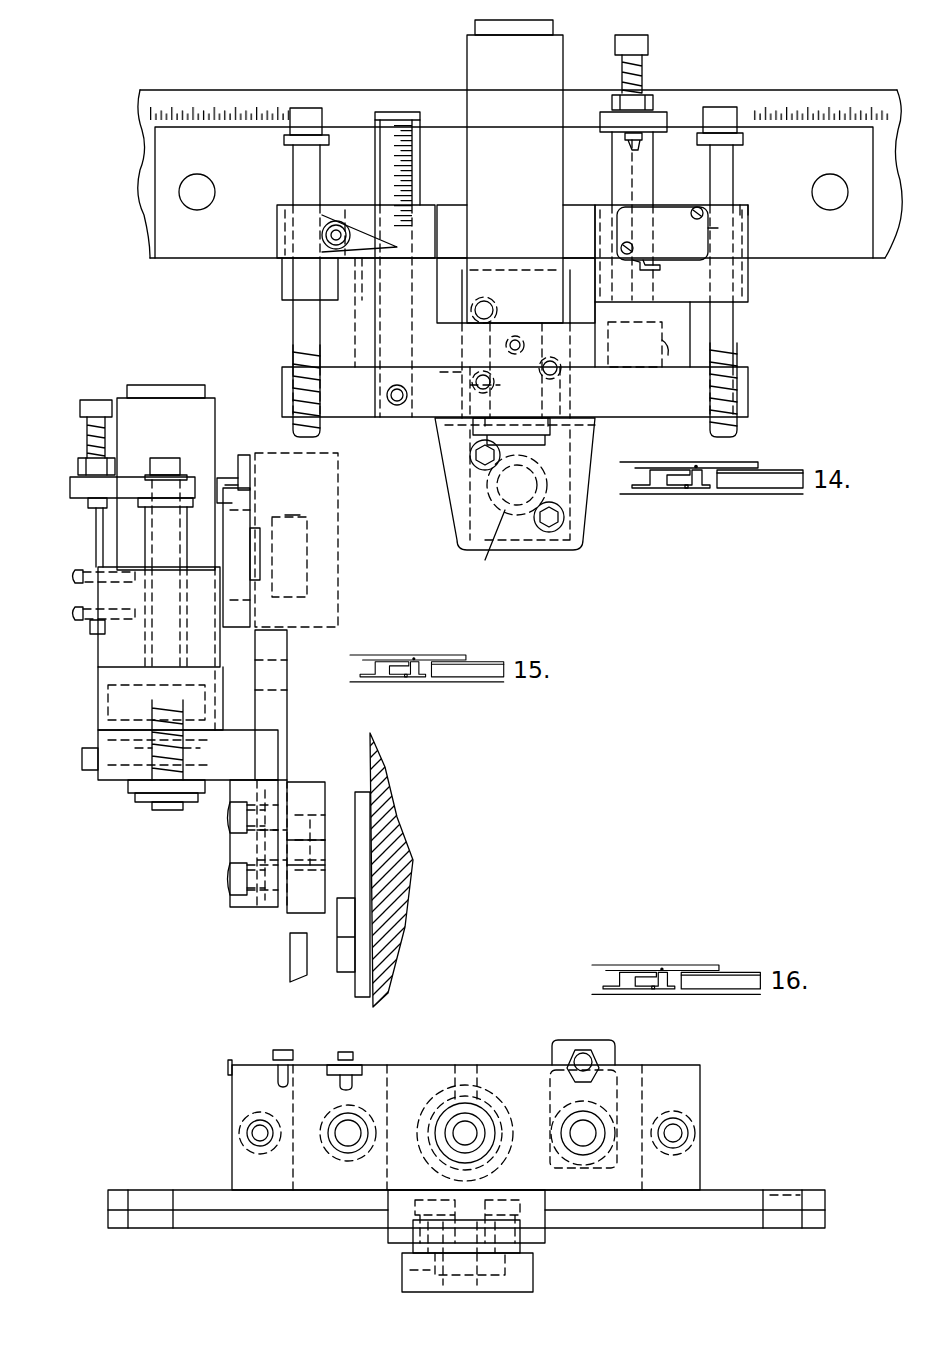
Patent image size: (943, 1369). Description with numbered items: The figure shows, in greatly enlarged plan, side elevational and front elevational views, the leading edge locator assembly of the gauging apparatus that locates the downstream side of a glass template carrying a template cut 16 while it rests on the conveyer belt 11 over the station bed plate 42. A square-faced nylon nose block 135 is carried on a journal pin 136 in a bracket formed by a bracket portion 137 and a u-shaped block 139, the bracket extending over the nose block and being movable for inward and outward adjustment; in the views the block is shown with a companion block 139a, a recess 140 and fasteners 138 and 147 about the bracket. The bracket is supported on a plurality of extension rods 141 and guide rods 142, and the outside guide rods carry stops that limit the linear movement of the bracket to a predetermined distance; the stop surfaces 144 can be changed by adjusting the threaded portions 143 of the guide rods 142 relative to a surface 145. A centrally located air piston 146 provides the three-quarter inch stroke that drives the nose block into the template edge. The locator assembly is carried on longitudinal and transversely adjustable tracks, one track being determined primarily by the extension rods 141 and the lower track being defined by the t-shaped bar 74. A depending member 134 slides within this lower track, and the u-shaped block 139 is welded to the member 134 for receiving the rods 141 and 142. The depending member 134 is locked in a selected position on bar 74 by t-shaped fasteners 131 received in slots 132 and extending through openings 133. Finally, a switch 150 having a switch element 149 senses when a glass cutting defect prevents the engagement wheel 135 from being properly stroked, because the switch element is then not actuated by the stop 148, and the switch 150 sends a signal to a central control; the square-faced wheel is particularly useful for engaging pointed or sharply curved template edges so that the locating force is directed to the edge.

In FIG. 15, the conveyer belt 11 is at (362, 917).
In FIG. 15, the template cut 16 is at (297, 947).
In FIG. 15, the station bed plate 42 is at (390, 810).
In FIG. 15, the t-slotted bar 74 is at (332, 593).
In FIG. 15, the t-shaped fastener 131 is at (297, 553).
In FIG. 15, the slot 132 is at (292, 517).
In FIG. 14, the opening 133 is at (188, 190).
In FIG. 16, the opening 133 is at (793, 1193).
In FIG. 14, the depending member 134 is at (230, 148).
In FIG. 15, the depending member 134 is at (230, 513).
In FIG. 16, the depending member 134 is at (825, 1200).
In FIG. 14, the nylon nose block 135 is at (578, 522).
In FIG. 15, the nylon nose block 135 is at (317, 795).
In FIG. 16, the nylon nose block 135 is at (527, 1275).
In FIG. 14, the journal pin 136 is at (515, 506).
In FIG. 15, the journal pin 136 is at (297, 827).
In FIG. 16, the journal pin 136 is at (447, 1267).
In FIG. 14, the bracket 137 is at (585, 437).
In FIG. 15, the bracket 137 is at (265, 900).
In FIG. 16, the bracket 137 is at (503, 1245).
In FIG. 14, the socket head screw 138 is at (557, 530).
In FIG. 15, the socket head screw 138 is at (223, 822).
In FIG. 16, the socket head screw 138 is at (498, 1205).
In FIG. 14, the u-shaped block 139 is at (282, 281).
In FIG. 15, the u-shaped block 139 is at (243, 743).
In FIG. 16, the u-shaped block 139 is at (692, 1073).
In FIG. 14, the carrier block 139a is at (743, 293).
In FIG. 15, the carrier block 139a is at (127, 645).
In FIG. 14, the recess 140 is at (672, 357).
In FIG. 14, the extension rod 141 is at (620, 170).
In FIG. 16, the extension rod 141 is at (350, 1130).
In FIG. 14, the guide rod 142 is at (305, 180).
In FIG. 15, the guide rod 142 is at (158, 527).
In FIG. 16, the guide rod 142 is at (258, 1133).
In FIG. 14, the threaded portion 143 is at (740, 390).
In FIG. 15, the threaded portion 143 is at (107, 743).
In FIG. 14, the stop surface 144 is at (714, 145).
In FIG. 14, the surface 145 is at (747, 203).
In FIG. 14, the air piston 146 is at (487, 55).
In FIG. 15, the air piston 146 is at (148, 412).
In FIG. 14, the pin 147 is at (510, 395).
In FIG. 14, the stop 148 is at (628, 145).
In FIG. 14, the switch element 149 is at (630, 193).
In FIG. 14, the switch 150 is at (673, 213).